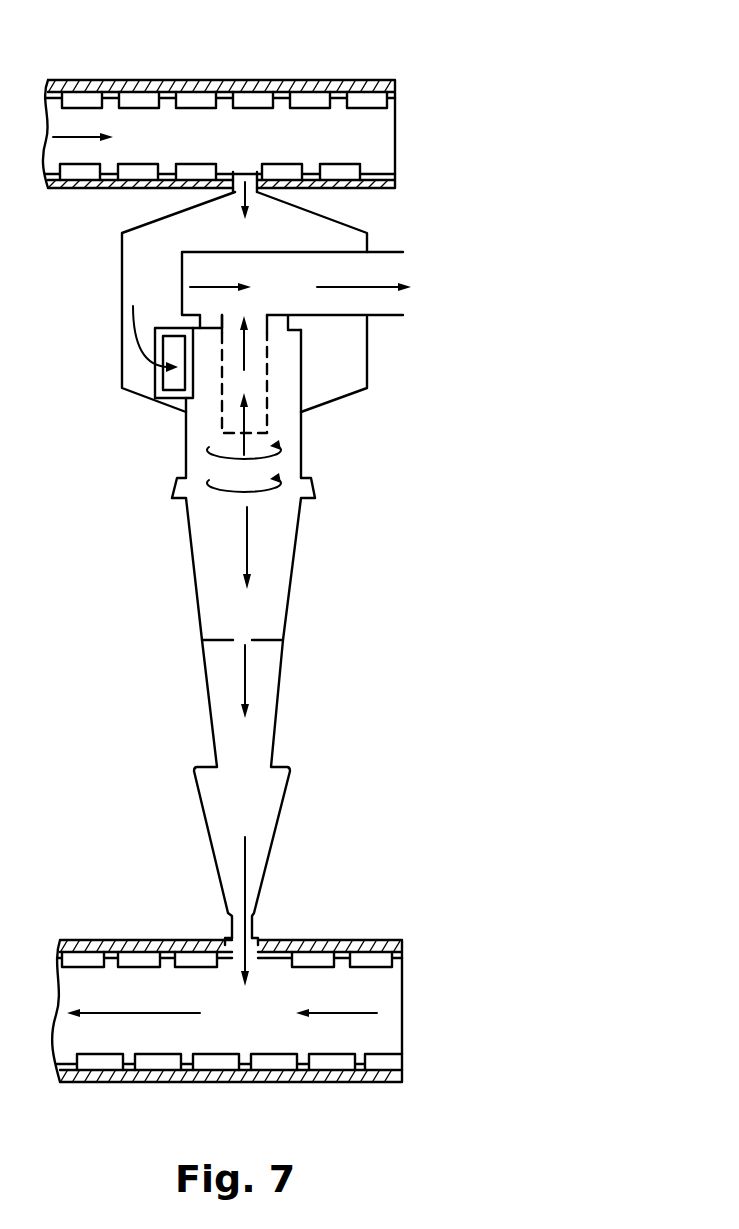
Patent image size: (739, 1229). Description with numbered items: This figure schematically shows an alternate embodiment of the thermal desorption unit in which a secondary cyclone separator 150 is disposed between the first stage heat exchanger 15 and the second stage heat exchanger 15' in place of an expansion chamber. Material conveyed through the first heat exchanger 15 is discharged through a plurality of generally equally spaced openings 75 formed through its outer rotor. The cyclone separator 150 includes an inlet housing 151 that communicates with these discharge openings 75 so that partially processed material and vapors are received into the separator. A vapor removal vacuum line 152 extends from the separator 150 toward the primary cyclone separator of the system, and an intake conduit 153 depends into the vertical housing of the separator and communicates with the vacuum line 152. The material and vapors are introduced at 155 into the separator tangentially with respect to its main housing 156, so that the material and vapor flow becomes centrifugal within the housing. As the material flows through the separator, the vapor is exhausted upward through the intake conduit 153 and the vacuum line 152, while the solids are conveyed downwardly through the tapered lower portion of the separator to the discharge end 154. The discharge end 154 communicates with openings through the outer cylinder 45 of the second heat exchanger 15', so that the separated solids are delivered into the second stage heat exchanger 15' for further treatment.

The first stage heat exchanger 15 is at (219, 100).
The discharge openings 75 is at (232, 193).
The secondary cyclone separator 150 is at (162, 588).
The inlet housing 151 is at (362, 232).
The vapor removal vacuum line 152 is at (387, 318).
The intake conduit 153 is at (267, 420).
The discharge end 154 is at (256, 930).
The tangential introduction point 155 is at (147, 379).
The main housing 156 is at (185, 448).
The second stage heat exchanger 15' is at (226, 997).
The outer cylinder 45 is at (225, 1083).